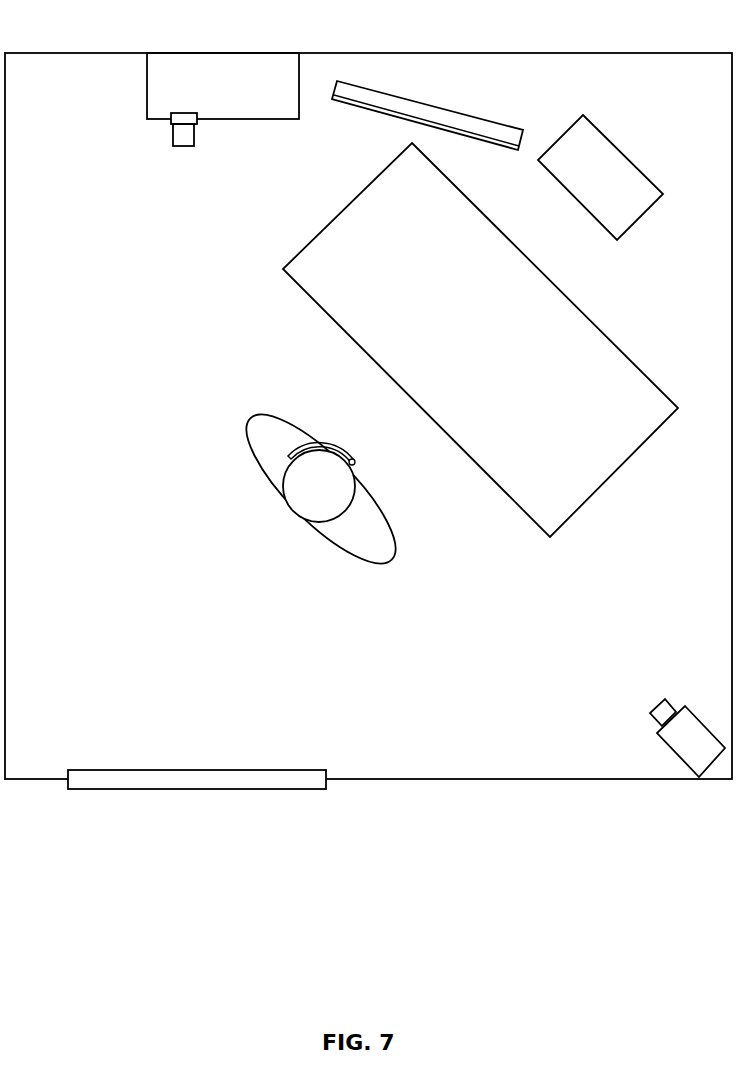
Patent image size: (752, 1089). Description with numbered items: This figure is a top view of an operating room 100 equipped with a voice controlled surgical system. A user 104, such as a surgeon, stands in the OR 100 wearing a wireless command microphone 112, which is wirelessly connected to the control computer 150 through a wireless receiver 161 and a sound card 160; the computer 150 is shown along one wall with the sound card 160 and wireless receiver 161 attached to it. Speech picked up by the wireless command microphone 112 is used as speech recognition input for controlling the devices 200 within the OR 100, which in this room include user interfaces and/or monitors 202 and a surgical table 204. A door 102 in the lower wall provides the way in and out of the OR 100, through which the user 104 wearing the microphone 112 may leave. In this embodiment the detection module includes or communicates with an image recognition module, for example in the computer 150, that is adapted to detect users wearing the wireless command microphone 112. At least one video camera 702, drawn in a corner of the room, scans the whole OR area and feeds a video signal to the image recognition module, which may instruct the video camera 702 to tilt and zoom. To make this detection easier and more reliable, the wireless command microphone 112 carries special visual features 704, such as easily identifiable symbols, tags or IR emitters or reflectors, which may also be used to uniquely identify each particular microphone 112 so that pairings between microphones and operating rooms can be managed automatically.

The operating room 100 is at (115, 52).
The control computer 150 is at (147, 83).
The sound card 160 is at (170, 120).
The wireless receiver 161 is at (187, 146).
The user interfaces and/or monitors 202 is at (432, 103).
The devices 200 is at (628, 155).
The surgical table 204 is at (598, 330).
The user 104 is at (253, 422).
The visual features 704 is at (298, 452).
The wireless command microphone 112 is at (355, 461).
The door 102 is at (197, 770).
The video camera 702 is at (657, 733).